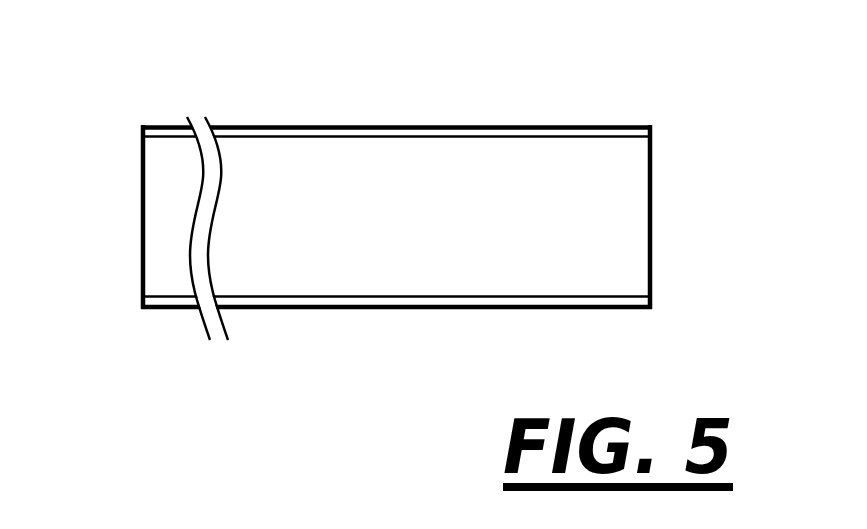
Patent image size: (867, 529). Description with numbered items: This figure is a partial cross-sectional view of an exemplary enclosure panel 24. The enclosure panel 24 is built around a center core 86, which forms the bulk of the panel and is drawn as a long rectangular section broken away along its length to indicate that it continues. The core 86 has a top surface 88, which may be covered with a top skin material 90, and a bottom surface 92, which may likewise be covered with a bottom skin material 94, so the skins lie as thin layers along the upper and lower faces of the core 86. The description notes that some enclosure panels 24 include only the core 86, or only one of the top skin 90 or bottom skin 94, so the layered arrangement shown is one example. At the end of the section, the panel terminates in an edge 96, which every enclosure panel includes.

The enclosure panel 24 is at (405, 224).
The center core 86 is at (540, 177).
The top surface 88 is at (435, 134).
The top skin material 90 is at (348, 128).
The bottom surface 92 is at (371, 298).
The bottom skin material 94 is at (428, 308).
The edge 96 is at (142, 192).